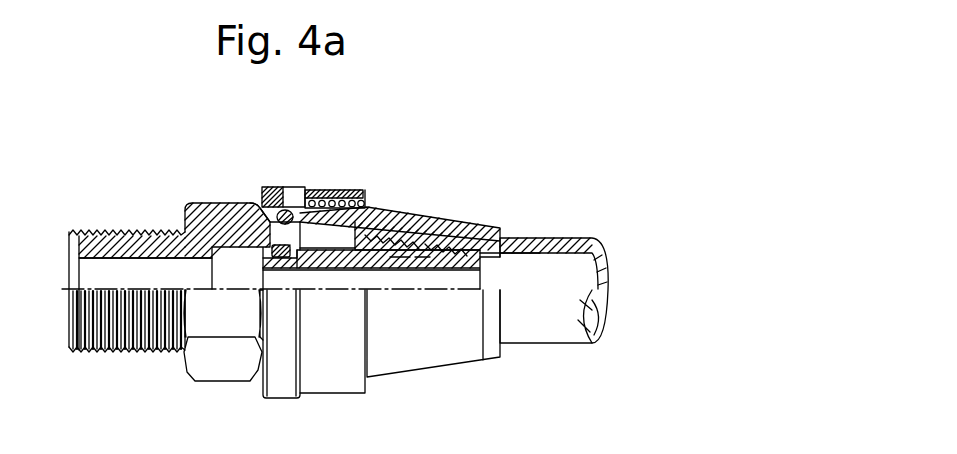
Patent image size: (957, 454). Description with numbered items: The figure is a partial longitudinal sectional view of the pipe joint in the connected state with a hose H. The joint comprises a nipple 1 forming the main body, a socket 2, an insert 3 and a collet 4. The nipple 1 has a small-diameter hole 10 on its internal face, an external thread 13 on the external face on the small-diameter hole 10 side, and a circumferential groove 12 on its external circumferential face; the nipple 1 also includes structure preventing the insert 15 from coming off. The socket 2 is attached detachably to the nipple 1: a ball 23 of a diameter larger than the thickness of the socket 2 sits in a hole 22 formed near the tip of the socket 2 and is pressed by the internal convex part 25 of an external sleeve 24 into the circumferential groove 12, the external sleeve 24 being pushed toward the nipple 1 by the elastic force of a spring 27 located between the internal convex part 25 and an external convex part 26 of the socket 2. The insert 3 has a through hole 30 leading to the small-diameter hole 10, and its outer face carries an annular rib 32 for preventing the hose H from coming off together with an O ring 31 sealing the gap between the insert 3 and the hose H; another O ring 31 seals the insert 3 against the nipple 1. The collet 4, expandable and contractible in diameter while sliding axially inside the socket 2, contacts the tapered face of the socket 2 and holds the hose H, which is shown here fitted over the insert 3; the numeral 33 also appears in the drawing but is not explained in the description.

The nipple 1 is at (193, 212).
The socket 2 is at (483, 216).
The insert 3 is at (513, 256).
The collet 4 is at (448, 230).
The small-diameter hole 10 is at (80, 260).
The circumferential groove 12 is at (268, 230).
The external thread 13 is at (107, 232).
The insert 15 is at (298, 247).
The hole 22 is at (320, 201).
The ball 23 is at (265, 190).
The external sleeve 24 is at (277, 189).
The internal convex part 25 is at (290, 210).
The external convex part 26 is at (310, 247).
The spring 27 is at (357, 192).
The through hole 30 is at (290, 258).
The O ring 31 is at (315, 266).
The annular rib 32 is at (397, 258).
The rib 33 is at (420, 262).
The hose H is at (538, 238).